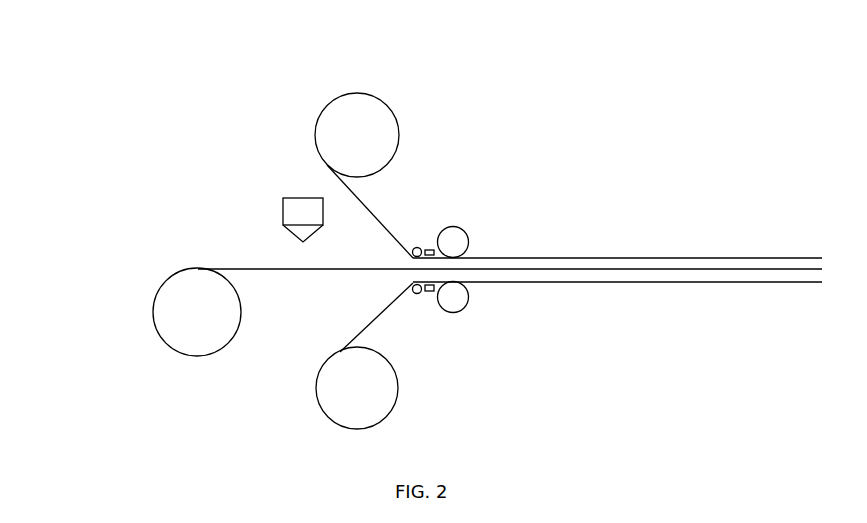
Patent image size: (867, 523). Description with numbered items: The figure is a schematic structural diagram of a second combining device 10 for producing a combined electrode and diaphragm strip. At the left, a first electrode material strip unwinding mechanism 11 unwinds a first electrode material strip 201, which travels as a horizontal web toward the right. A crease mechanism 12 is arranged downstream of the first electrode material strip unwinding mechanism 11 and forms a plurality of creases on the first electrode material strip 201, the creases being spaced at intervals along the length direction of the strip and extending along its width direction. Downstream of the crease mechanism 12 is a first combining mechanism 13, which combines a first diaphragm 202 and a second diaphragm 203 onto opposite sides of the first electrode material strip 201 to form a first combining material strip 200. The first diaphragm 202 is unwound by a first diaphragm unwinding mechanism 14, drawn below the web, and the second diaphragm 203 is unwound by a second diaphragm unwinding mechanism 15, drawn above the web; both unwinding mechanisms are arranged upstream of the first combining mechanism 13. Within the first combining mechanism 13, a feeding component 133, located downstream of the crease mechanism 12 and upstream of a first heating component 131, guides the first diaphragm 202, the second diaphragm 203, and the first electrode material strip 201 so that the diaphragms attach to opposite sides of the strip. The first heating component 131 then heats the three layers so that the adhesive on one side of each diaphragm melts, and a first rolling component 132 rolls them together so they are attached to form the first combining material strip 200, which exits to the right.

The second combining device 10 is at (94, 91).
The first electrode material strip unwinding mechanism 11 is at (155, 318).
The crease mechanism 12 is at (293, 207).
The first combining mechanism 13 is at (510, 365).
The first diaphragm unwinding mechanism 14 is at (316, 402).
The second diaphragm unwinding mechanism 15 is at (357, 93).
The first heating component 131 is at (430, 292).
The first rolling component 132 is at (468, 306).
The feeding component 133 is at (418, 294).
The first combining material strip 200 is at (615, 228).
The first electrode material strip 201 is at (267, 269).
The first diaphragm 202 is at (365, 323).
The second diaphragm 203 is at (382, 221).